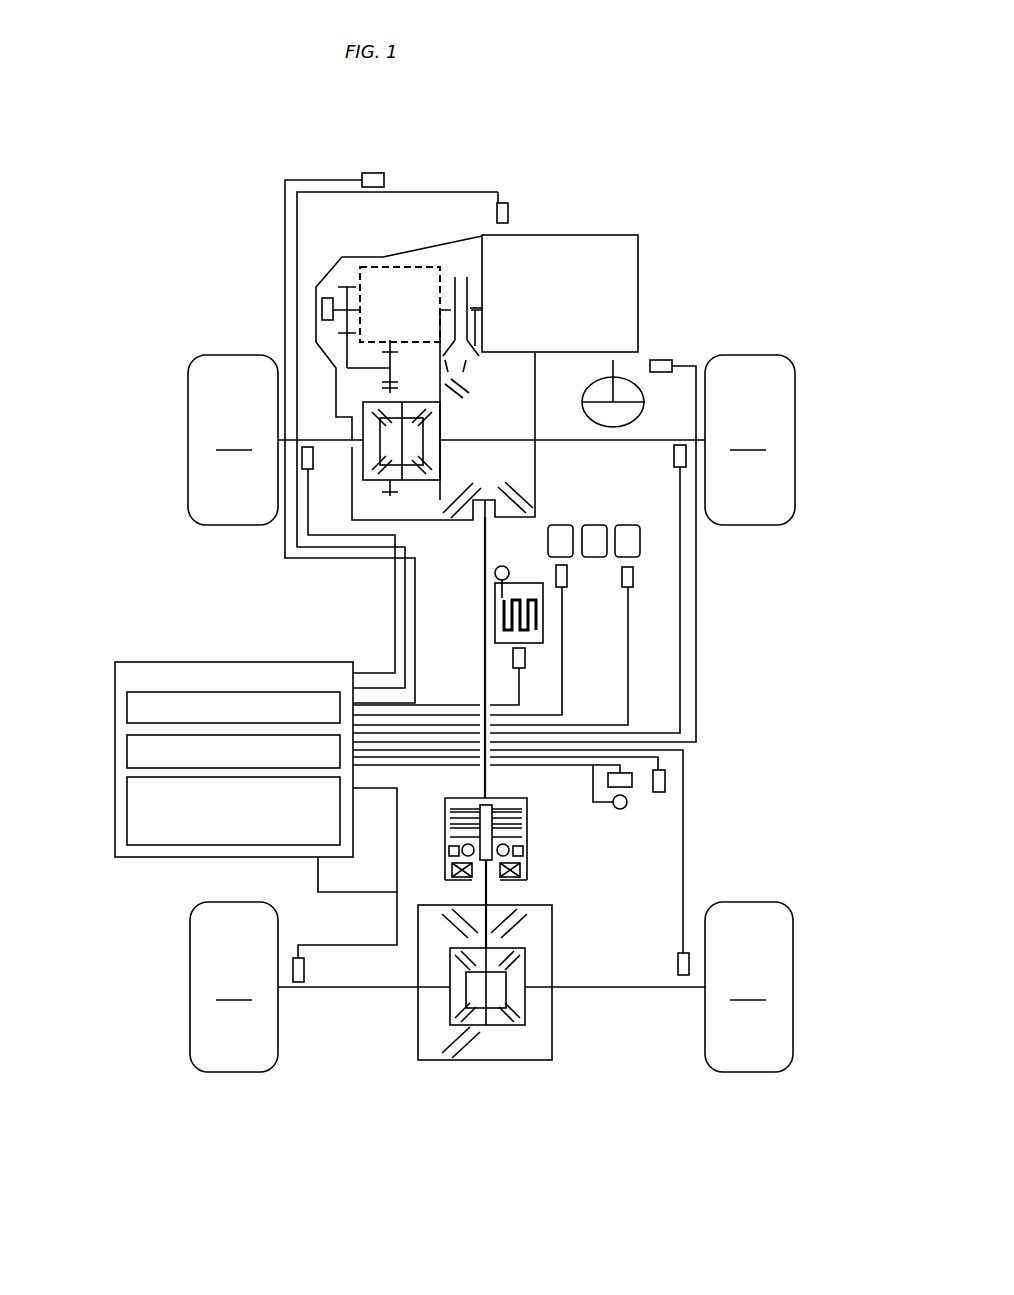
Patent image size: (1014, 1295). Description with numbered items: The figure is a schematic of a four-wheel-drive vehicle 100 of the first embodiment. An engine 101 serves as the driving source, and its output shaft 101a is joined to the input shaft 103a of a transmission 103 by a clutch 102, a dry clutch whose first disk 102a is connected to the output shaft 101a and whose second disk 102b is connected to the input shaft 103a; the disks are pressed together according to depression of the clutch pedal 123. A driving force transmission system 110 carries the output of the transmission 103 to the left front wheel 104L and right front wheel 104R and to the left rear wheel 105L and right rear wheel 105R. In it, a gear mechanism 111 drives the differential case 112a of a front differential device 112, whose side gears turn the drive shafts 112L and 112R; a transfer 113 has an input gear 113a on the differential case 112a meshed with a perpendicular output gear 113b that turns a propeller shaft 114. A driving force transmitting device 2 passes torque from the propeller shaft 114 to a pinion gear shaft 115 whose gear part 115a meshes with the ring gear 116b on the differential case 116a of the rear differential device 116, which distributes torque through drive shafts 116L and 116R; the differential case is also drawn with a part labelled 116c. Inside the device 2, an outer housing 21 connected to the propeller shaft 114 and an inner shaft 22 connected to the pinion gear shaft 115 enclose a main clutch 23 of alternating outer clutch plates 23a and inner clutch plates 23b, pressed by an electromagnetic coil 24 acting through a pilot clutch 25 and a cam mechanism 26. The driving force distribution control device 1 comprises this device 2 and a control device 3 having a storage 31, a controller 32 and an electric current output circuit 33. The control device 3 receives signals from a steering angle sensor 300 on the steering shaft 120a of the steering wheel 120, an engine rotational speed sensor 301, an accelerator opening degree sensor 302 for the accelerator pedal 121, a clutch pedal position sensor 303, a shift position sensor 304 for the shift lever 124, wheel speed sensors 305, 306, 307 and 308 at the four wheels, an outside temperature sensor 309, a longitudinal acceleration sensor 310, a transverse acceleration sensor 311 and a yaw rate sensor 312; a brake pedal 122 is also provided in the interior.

The four-wheel-drive vehicle 100 is at (636, 128).
The engine 101 is at (598, 234).
The output shaft 101a is at (480, 307).
The clutch 102 is at (460, 272).
The first disk 102a is at (468, 348).
The second disk 102b is at (460, 398).
The transmission 103 is at (392, 267).
The input shaft 103a is at (448, 303).
The left front wheel 104L is at (215, 355).
The right front wheel 104R is at (740, 357).
The left rear wheel 105L is at (245, 1073).
The right rear wheel 105R is at (737, 1073).
The driving force transmission system 110 is at (316, 266).
The gear mechanism 111 is at (326, 332).
The front differential device 112 is at (413, 488).
The differential case 112a is at (385, 481).
The drive shaft 112L is at (327, 440).
The drive shaft 112R is at (650, 438).
The transfer 113 is at (502, 432).
The input gear 113a is at (470, 397).
The output gear 113b is at (503, 487).
The propeller shaft 114 is at (483, 633).
The pinion gear shaft 115 is at (490, 892).
The gear part 115a is at (525, 921).
The rear differential device 116 is at (540, 1022).
The differential case 116a is at (497, 1026).
The ring gear 116b is at (445, 921).
The differential case 116c is at (470, 1062).
The drive shaft 116L is at (315, 988).
The drive shaft 116R is at (612, 988).
The steering wheel 120 is at (642, 368).
The steering shaft 120a is at (614, 362).
The accelerator pedal 121 is at (632, 525).
The brake pedal 122 is at (596, 525).
The clutch pedal 123 is at (560, 525).
The shift lever 124 is at (516, 560).
The driving force distribution control device 1 is at (212, 640).
The driving force transmitting device 2 is at (470, 797).
The control device 3 is at (206, 739).
The outer housing 21 is at (458, 796).
The inner shaft 22 is at (453, 836).
The main clutch 23 is at (532, 815).
The outer clutch plates 23a is at (455, 826).
The inner clutch plates 23b is at (452, 803).
The electromagnetic coil 24 is at (452, 869).
The pilot clutch 25 is at (532, 853).
The cam mechanism 26 is at (532, 836).
The storage 31 is at (125, 712).
The controller 32 is at (125, 753).
The electric current output circuit 33 is at (125, 805).
The steering angle sensor 300 is at (662, 360).
The engine rotational speed sensor 301 is at (508, 210).
The accelerator opening degree sensor 302 is at (634, 586).
The clutch pedal position sensor 303 is at (567, 586).
The shift position sensor 304 is at (526, 668).
The vehicle wheel speed sensor 305 is at (312, 470).
The vehicle wheel speed sensor 306 is at (673, 457).
The vehicle wheel speed sensor 307 is at (306, 970).
The vehicle wheel speed sensor 308 is at (678, 967).
The outside temperature sensor 309 is at (368, 172).
The longitudinal acceleration sensor 310 is at (668, 775).
The transverse acceleration sensor 311 is at (630, 784).
The yaw rate sensor 312 is at (625, 810).